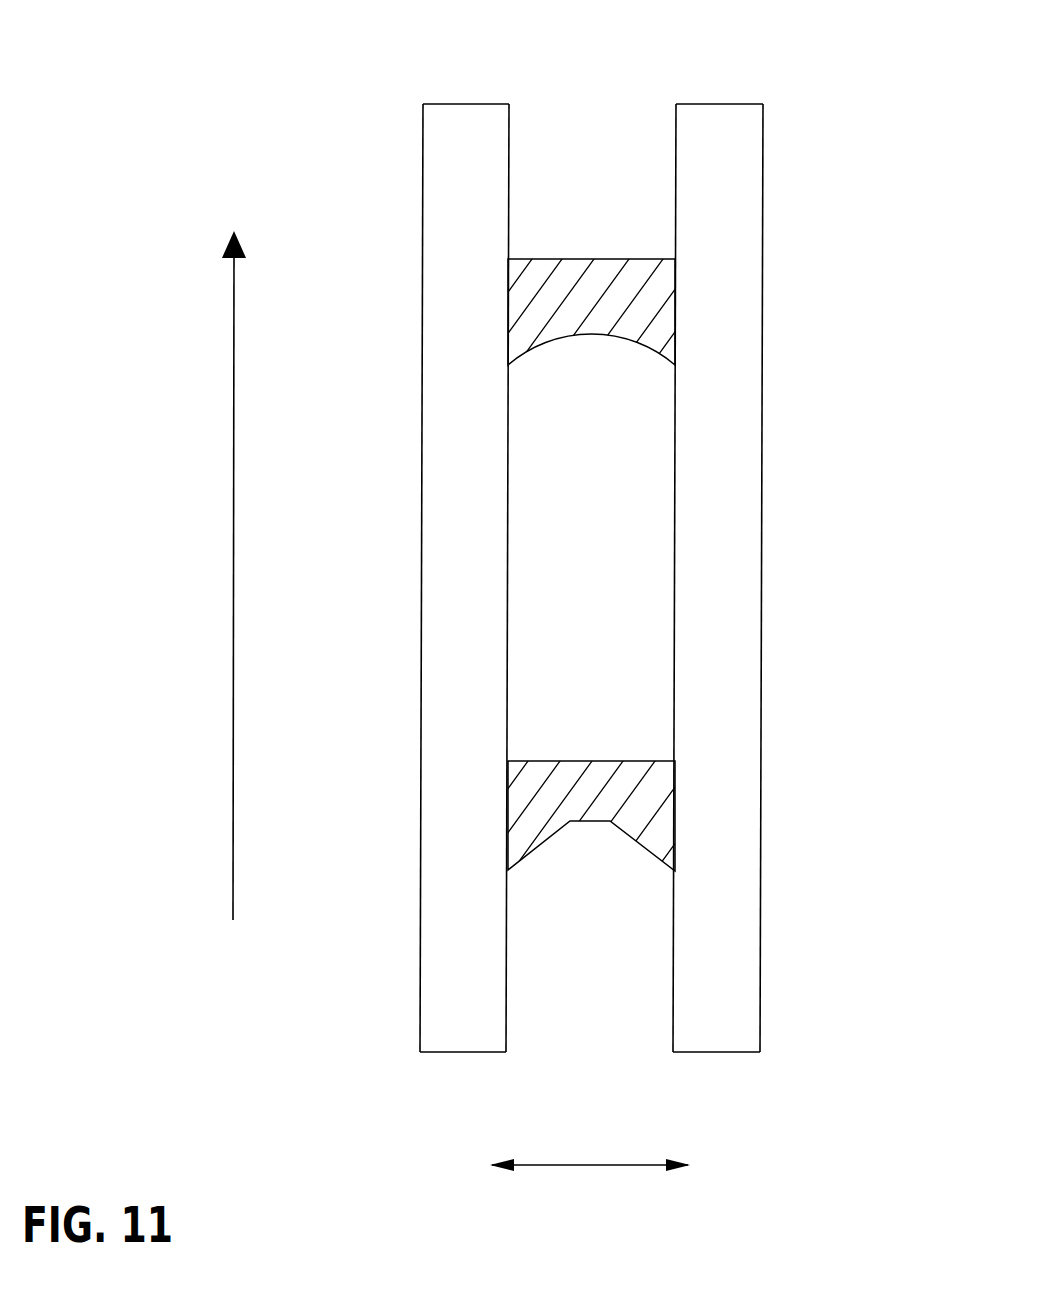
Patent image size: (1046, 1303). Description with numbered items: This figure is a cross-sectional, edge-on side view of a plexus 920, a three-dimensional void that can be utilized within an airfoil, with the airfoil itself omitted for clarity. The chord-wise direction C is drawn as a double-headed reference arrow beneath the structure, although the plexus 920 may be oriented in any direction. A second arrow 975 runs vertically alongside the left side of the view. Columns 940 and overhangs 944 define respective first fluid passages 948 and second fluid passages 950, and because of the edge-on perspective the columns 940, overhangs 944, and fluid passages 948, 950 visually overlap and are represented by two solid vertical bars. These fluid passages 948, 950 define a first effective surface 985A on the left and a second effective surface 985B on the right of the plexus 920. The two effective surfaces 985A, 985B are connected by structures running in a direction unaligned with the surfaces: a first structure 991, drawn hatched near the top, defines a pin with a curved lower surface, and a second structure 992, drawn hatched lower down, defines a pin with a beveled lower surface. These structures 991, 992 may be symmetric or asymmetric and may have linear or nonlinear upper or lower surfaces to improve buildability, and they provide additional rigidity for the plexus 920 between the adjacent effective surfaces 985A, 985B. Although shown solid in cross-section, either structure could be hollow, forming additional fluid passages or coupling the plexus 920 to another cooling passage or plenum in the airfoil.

The plexus 920 is at (377, 137).
The columns 940 is at (571, 578).
The overhangs 944 is at (725, 210).
The first fluid passages 948 is at (583, 578).
The second fluid passages 950 is at (472, 447).
The flow direction arrow 975 is at (233, 333).
The first effective surface 985A is at (420, 585).
The second effective surface 985B is at (763, 597).
The first structure 991 is at (600, 273).
The second structure 992 is at (605, 775).
The chord-wise direction C is at (618, 1165).